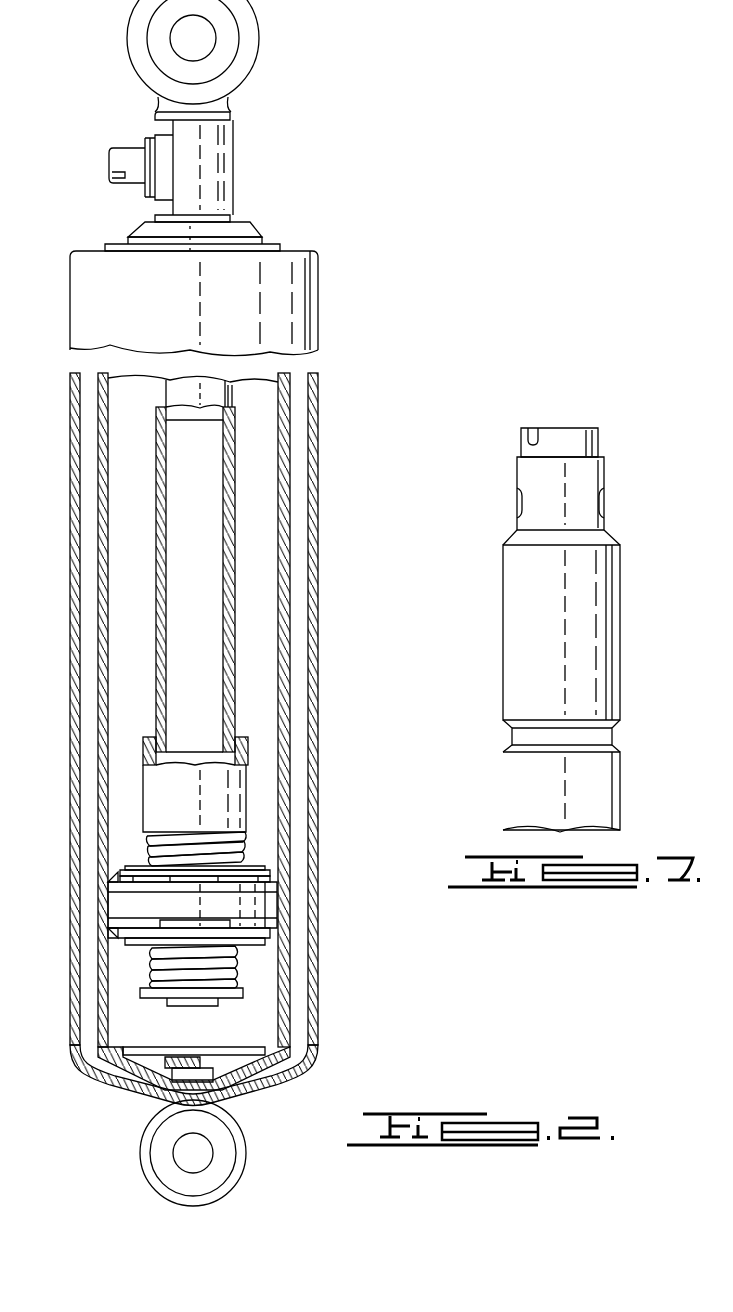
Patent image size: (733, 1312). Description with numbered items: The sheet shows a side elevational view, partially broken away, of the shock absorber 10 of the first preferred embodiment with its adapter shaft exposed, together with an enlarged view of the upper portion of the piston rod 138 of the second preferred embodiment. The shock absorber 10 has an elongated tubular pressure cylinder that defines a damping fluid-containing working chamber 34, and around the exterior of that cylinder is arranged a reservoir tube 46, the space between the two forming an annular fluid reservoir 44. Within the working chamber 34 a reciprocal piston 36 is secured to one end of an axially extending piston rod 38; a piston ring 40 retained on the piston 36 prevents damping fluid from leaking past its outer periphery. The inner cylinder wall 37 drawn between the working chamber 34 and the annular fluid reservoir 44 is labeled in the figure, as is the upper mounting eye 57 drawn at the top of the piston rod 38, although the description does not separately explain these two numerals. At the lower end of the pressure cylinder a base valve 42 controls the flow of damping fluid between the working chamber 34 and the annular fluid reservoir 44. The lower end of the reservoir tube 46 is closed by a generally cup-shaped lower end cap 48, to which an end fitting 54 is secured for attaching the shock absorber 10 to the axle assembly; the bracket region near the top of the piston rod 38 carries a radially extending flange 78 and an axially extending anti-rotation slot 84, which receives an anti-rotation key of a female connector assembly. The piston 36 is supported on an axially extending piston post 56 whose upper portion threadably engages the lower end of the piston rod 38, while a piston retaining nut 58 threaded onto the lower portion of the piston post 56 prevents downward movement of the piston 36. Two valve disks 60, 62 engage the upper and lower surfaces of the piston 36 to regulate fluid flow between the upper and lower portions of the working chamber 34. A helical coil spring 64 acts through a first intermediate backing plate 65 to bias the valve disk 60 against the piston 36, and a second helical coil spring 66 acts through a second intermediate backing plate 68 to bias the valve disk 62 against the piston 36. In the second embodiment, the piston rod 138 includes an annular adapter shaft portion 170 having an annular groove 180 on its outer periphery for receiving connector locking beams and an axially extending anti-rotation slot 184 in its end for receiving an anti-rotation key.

In FIG. 2, the shock absorber 10 is at (310, 312).
In FIG. 2, the working chamber 34 is at (260, 630).
In FIG. 2, the piston 36 is at (270, 885).
In FIG. 2, the inner tube 37 is at (285, 595).
In FIG. 2, the piston rod 38 is at (230, 675).
In FIG. 2, the piston ring 40 is at (275, 905).
In FIG. 2, the base valve 42 is at (228, 1062).
In FIG. 2, the annular fluid reservoir 44 is at (88, 900).
In FIG. 2, the reservoir tube 46 is at (70, 600).
In FIG. 2, the lower end cap 48 is at (257, 1085).
In FIG. 2, the end fitting 54 is at (160, 1138).
In FIG. 2, the piston post 56 is at (238, 782).
In FIG. 2, the upper mounting eye 57 is at (232, 45).
In FIG. 2, the piston retaining nut 58 is at (243, 995).
In FIG. 2, the valve disk 60 is at (118, 870).
In FIG. 2, the valve disk 62 is at (122, 932).
In FIG. 2, the helical coil spring 64 is at (245, 845).
In FIG. 2, the first intermediate backing plate 65 is at (132, 862).
In FIG. 2, the helical coil spring 66 is at (236, 972).
In FIG. 2, the second intermediate backing plate 68 is at (130, 942).
In FIG. 2, the radially extending flange 78 is at (145, 140).
In FIG. 2, the anti-rotation slot 84 is at (118, 176).
In FIG. 7, the piston rod 138 is at (612, 652).
In FIG. 7, the annular adapter shaft portion 170 is at (604, 480).
In FIG. 7, the annular groove 180 is at (519, 503).
In FIG. 7, the anti-rotation slot 184 is at (533, 430).